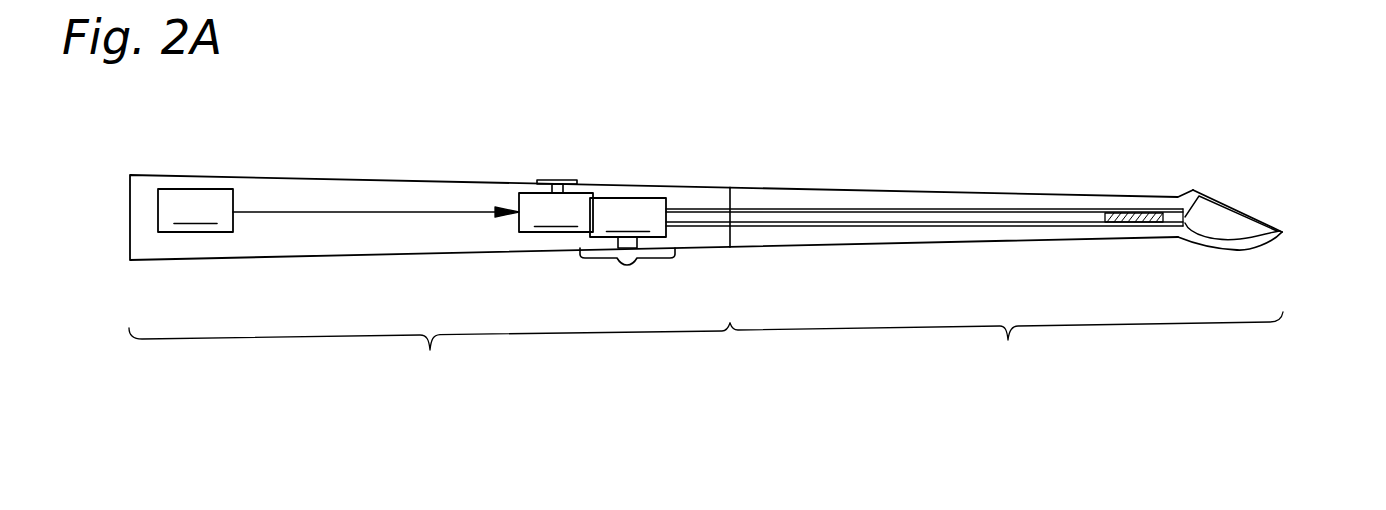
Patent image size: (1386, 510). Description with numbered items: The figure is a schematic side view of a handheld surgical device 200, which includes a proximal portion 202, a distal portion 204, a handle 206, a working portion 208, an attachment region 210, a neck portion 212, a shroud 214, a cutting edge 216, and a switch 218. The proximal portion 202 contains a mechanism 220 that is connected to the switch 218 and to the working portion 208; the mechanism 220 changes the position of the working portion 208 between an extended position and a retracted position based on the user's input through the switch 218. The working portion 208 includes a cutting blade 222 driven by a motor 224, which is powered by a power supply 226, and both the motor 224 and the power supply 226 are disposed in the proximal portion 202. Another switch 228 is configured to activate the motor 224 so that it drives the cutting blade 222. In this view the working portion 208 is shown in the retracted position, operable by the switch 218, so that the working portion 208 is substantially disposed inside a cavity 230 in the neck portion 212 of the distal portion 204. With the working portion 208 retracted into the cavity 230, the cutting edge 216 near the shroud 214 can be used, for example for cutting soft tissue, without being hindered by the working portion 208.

The handheld surgical device 200 is at (519, 105).
The proximal portion 202 is at (430, 350).
The distal portion 204 is at (1008, 340).
The handle 206 is at (312, 178).
The working portion 208 is at (1143, 215).
The attachment region 210 is at (730, 187).
The neck portion 212 is at (872, 192).
The shroud 214 is at (1253, 249).
The cutting edge 216 is at (1208, 192).
The switch 218 is at (627, 266).
The mechanism 220 is at (628, 223).
The cutting blade 222 is at (1142, 227).
The motor 224 is at (556, 212).
The power supply 226 is at (338, 210).
The switch 228 is at (546, 180).
The cavity 230 is at (999, 228).